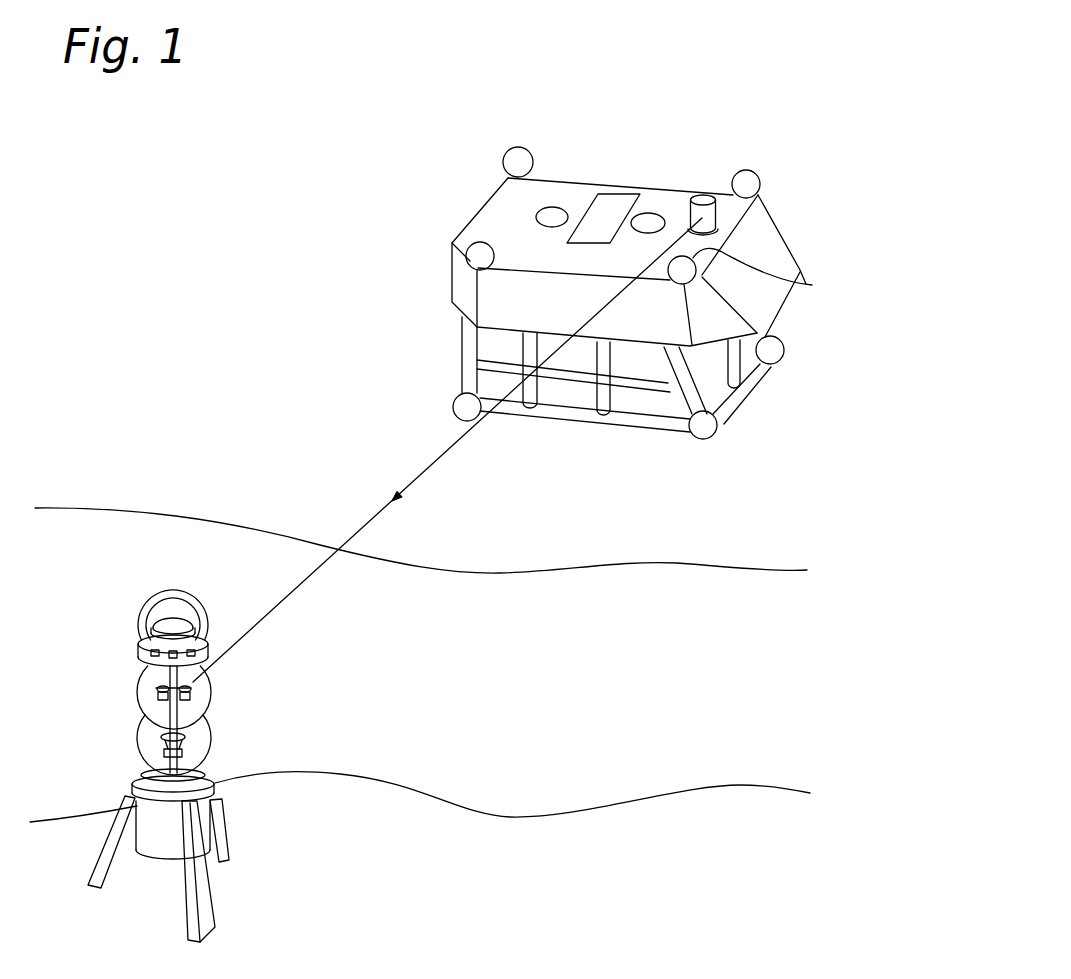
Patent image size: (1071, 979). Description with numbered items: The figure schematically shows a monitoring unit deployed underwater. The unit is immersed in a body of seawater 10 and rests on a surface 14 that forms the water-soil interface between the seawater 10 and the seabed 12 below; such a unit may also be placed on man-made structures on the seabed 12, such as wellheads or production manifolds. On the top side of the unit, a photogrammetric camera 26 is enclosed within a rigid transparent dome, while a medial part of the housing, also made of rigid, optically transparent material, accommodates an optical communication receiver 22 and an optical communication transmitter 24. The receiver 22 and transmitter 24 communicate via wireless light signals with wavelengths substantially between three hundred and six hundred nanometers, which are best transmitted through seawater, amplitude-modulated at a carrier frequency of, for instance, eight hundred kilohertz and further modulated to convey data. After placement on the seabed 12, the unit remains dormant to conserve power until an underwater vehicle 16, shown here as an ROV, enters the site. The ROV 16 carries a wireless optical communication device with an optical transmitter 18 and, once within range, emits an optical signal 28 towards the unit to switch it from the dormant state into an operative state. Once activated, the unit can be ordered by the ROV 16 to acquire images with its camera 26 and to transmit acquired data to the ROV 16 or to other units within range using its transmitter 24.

The seawater 10 is at (142, 220).
The seabed 12 is at (75, 569).
The surface 14 is at (117, 525).
The underwater vehicle 16 is at (443, 501).
The optical transmitter 18 is at (703, 200).
The optical communication receiver 22 is at (157, 687).
The optical communication transmitter 24 is at (163, 752).
The photogrammetric camera 26 is at (160, 622).
The optical signal 28 is at (433, 463).